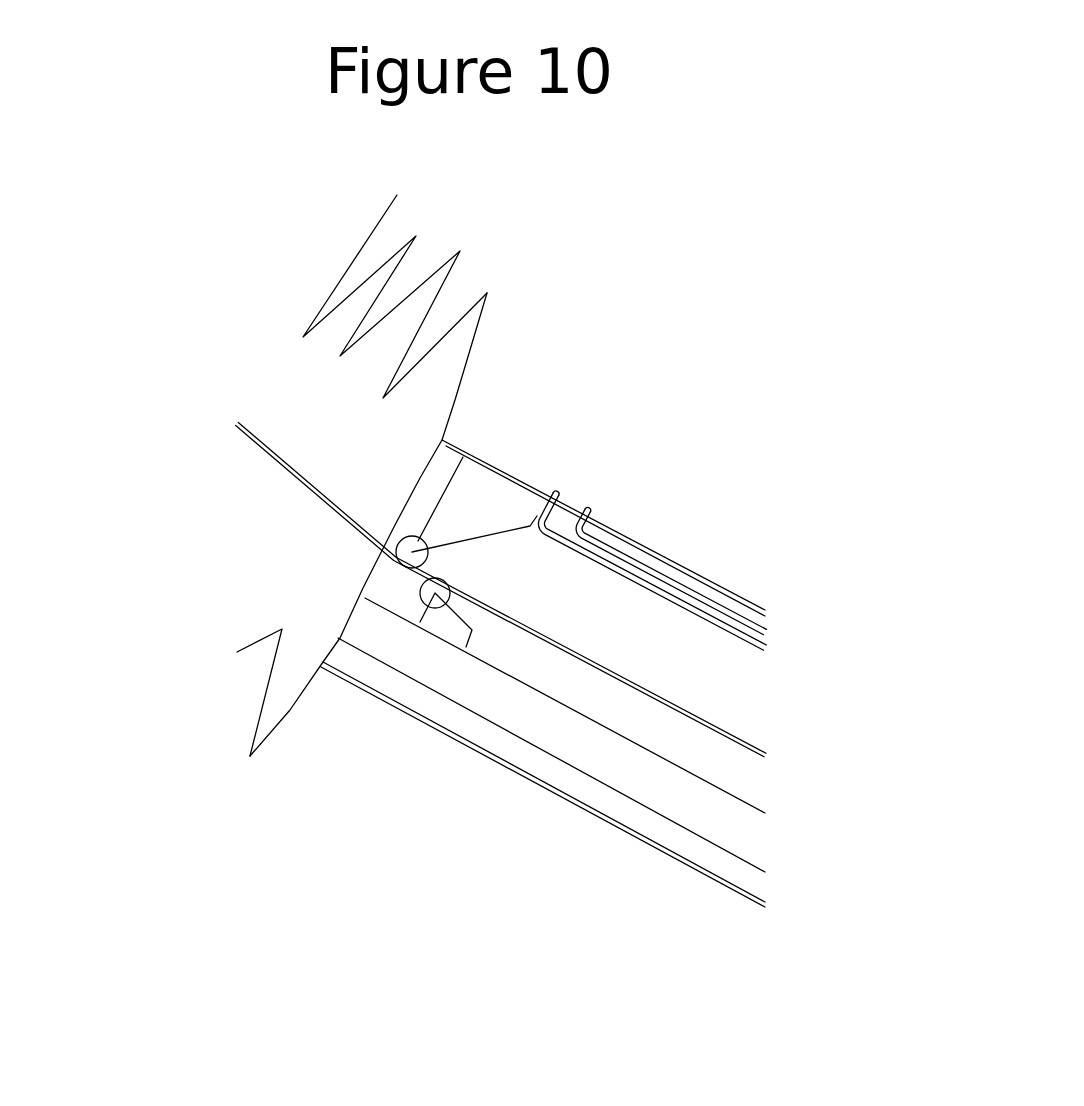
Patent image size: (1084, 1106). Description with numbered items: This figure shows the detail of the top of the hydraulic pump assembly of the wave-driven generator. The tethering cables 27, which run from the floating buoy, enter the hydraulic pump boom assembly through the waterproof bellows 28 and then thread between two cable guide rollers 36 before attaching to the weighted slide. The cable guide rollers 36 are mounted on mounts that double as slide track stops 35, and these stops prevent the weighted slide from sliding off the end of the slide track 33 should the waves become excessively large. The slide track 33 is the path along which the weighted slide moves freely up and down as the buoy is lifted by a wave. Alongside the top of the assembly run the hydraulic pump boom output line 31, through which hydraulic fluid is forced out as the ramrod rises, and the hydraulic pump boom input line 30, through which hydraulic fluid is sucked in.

The tethering cables 27 is at (241, 442).
The waterproof bellows 28 is at (491, 304).
The hydraulic pump boom input line 30 is at (591, 505).
The hydraulic pump boom output line 31 is at (560, 488).
The slide track 33 is at (635, 778).
The slide track stops 35 is at (490, 496).
The cable guide rollers 36 is at (413, 552).